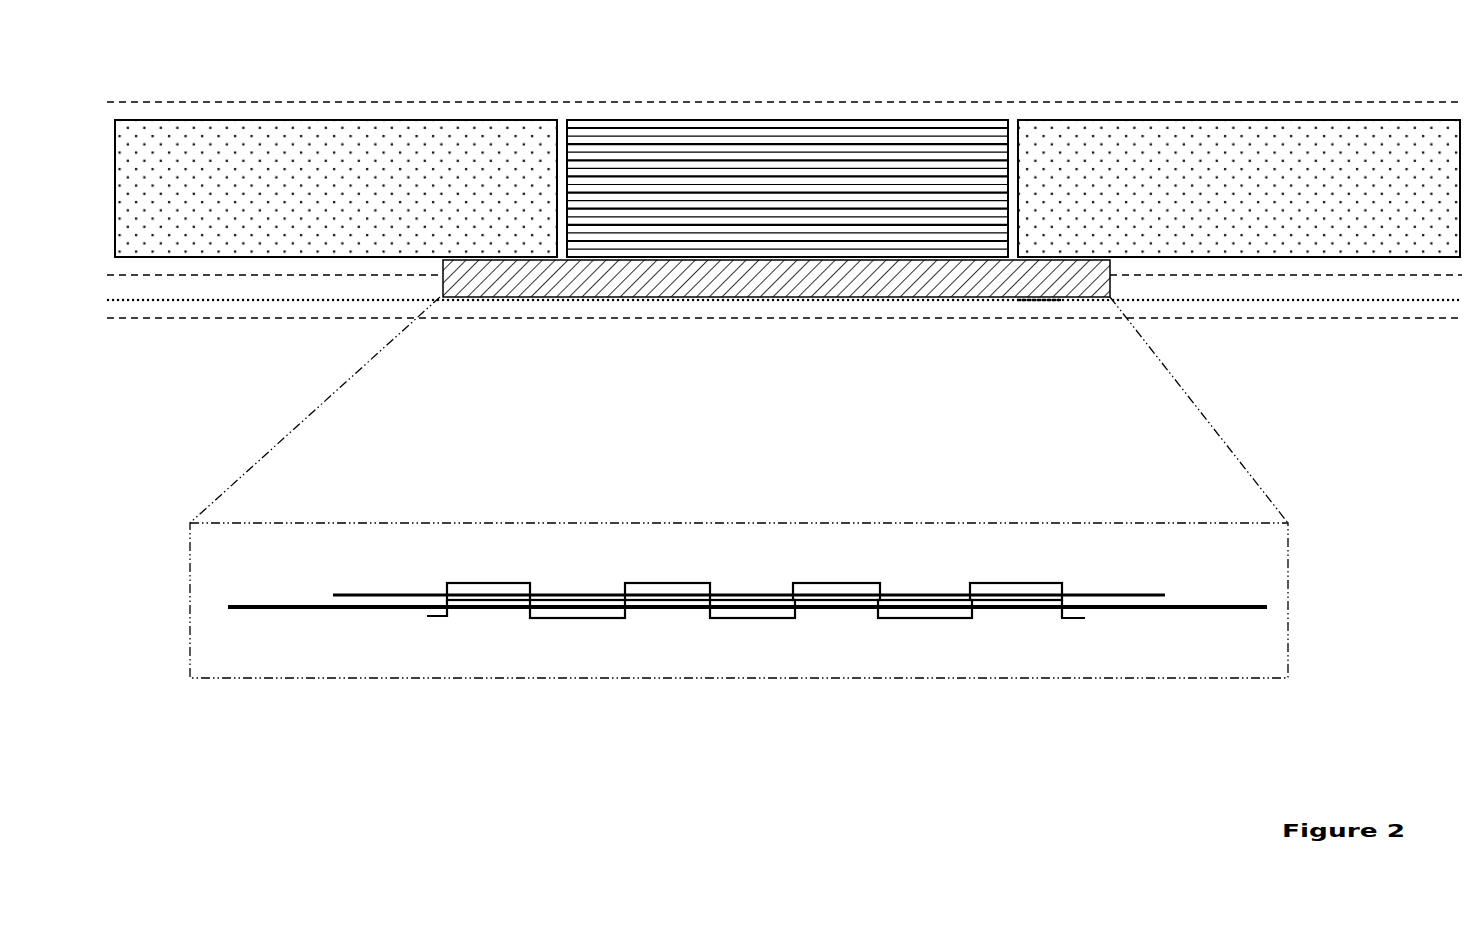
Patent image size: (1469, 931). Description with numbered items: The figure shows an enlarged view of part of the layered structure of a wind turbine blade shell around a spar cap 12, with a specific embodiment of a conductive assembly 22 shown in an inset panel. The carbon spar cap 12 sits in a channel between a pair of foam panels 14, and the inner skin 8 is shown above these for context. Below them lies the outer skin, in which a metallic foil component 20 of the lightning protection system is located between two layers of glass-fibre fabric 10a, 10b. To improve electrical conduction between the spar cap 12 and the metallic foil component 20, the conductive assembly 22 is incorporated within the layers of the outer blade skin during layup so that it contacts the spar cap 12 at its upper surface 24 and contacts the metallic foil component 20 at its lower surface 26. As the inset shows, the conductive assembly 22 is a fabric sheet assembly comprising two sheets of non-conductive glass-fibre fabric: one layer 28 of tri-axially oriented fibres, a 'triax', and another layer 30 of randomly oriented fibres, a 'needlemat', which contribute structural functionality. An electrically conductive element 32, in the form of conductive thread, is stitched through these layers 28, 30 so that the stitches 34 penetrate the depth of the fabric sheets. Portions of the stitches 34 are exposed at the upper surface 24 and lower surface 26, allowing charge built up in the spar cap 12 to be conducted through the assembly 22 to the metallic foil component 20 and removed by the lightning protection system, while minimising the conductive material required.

The inner skin 8 is at (253, 102).
The foam panels 14 is at (375, 120).
The spar cap 12 is at (593, 120).
The conductive assembly 22 is at (665, 275).
The upper surface of the conductive assembly 24 is at (1033, 258).
The lower surface of the conductive assembly 26 is at (1033, 299).
The metallic foil component 20 is at (303, 300).
The layer of glass-fibre fabric 10a is at (187, 318).
The layer of glass-fibre fabric 10b is at (1392, 275).
The tri-axial glass-fibre fabric layer 28 is at (1088, 595).
The needlemat glass-fibre fabric layer 30 is at (1203, 610).
The electrically conductive element 32 is at (642, 579).
The stitches 34 is at (528, 593).